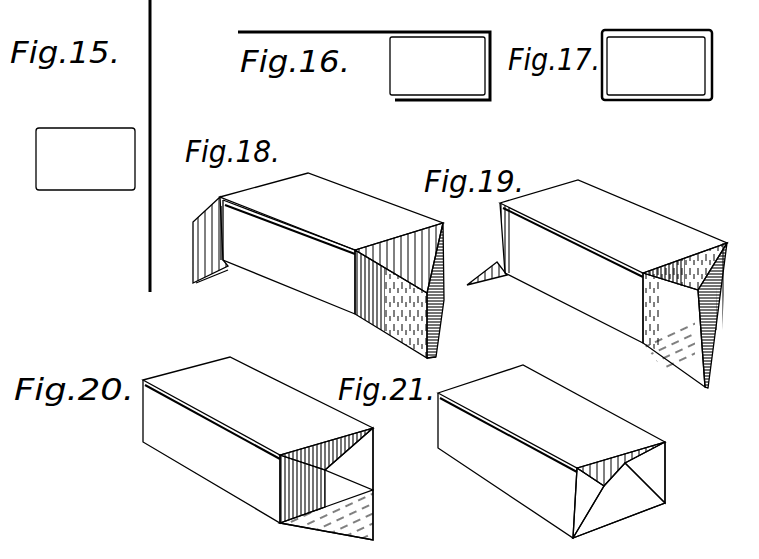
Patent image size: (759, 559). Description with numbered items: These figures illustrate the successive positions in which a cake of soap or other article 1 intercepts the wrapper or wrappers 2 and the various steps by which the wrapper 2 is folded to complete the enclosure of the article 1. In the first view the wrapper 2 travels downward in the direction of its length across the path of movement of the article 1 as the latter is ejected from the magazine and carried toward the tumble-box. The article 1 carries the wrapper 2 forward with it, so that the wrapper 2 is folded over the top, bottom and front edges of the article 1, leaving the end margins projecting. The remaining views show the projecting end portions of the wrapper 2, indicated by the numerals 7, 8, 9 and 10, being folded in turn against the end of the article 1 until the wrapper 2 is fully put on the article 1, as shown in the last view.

In FIG. 15, the cake of soap or other article 1 is at (67, 146).
In FIG. 16, the cake of soap or other article 1 is at (408, 63).
In FIG. 17, the cake of soap or other article 1 is at (656, 66).
In FIG. 15, the wrapper 2 is at (148, 60).
In FIG. 16, the wrapper 2 is at (424, 34).
In FIG. 17, the wrapper 2 is at (712, 55).
In FIG. 18, the wrapper 2 is at (362, 206).
In FIG. 19, the wrapper 2 is at (640, 219).
In FIG. 20, the wrapper 2 is at (287, 400).
In FIG. 21, the wrapper 2 is at (582, 413).
In FIG. 18, the end flap fold 7 is at (399, 258).
In FIG. 19, the end flap fold 7 is at (685, 266).
In FIG. 20, the end flap fold 7 is at (325, 458).
In FIG. 21, the end flap fold 7 is at (603, 473).
In FIG. 18, the end tuck flap 8 is at (391, 304).
In FIG. 19, the end tuck flap 8 is at (674, 330).
In FIG. 20, the end tuck flap 8 is at (302, 489).
In FIG. 21, the end tuck flap 8 is at (588, 503).
In FIG. 18, the side flap 9 is at (437, 292).
In FIG. 19, the side flap 9 is at (718, 320).
In FIG. 20, the side flap 9 is at (349, 460).
In FIG. 21, the side flap 9 is at (645, 472).
In FIG. 18, the bottom flap 10 is at (433, 346).
In FIG. 19, the bottom flap 10 is at (706, 390).
In FIG. 20, the bottom flap 10 is at (373, 540).
In FIG. 21, the bottom flap 10 is at (619, 500).